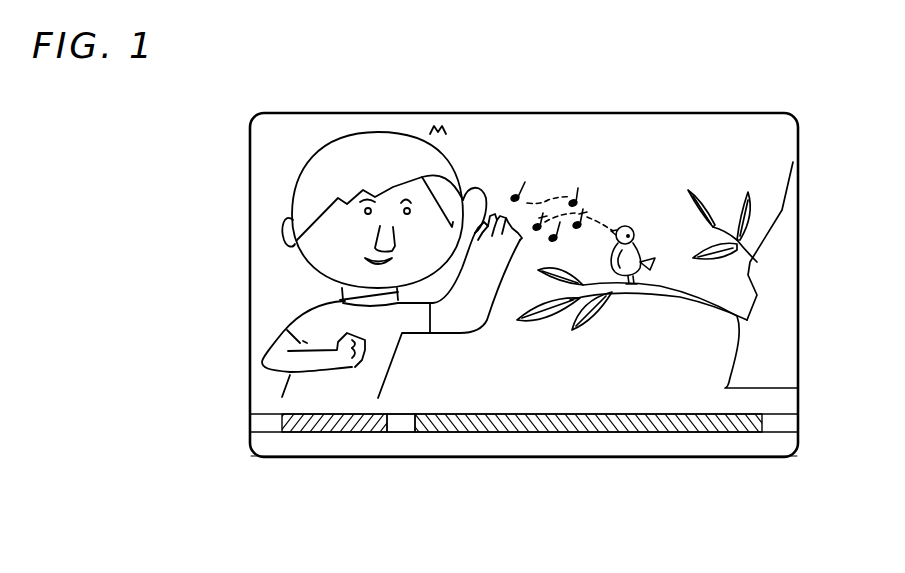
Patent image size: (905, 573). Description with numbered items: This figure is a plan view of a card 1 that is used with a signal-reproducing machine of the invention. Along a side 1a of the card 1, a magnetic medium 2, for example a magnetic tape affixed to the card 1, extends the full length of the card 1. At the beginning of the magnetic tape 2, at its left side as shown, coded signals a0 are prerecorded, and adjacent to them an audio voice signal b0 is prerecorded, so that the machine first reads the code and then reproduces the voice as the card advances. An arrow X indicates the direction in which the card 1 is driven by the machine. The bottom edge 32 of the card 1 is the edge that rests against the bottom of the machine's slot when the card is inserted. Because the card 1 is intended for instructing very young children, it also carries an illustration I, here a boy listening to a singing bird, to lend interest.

The card 1 is at (813, 160).
The side of the card 1a is at (776, 452).
The magnetic medium 2 is at (396, 428).
The coded signals a0 is at (300, 426).
The audio voice signal b0 is at (582, 427).
The bottom edge 32 is at (663, 459).
The arrow X is at (540, 483).
The illustration I is at (460, 160).